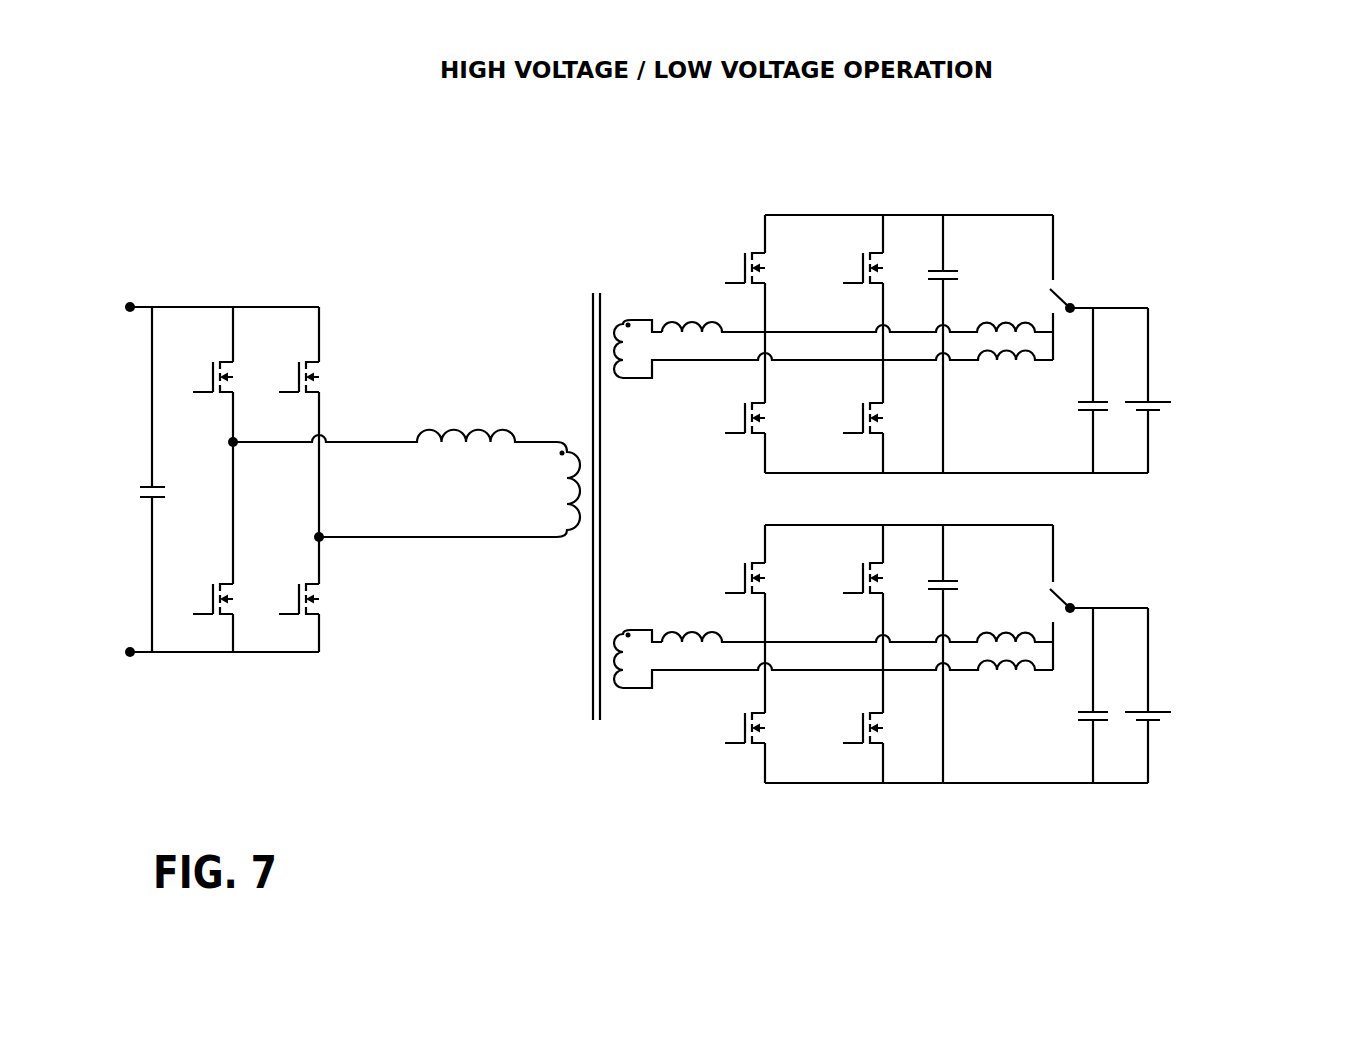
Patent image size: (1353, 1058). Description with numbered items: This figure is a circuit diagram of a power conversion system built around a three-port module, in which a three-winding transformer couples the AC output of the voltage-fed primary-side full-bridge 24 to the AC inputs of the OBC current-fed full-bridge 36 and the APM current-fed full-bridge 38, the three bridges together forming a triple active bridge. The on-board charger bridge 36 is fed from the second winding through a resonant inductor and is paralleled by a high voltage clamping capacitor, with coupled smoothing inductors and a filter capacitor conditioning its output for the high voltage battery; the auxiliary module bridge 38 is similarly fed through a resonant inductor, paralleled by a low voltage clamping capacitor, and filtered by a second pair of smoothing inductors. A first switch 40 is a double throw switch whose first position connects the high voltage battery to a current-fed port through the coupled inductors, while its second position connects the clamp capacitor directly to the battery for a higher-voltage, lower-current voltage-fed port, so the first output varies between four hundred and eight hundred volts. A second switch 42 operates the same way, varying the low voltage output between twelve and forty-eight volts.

The voltage-fed primary-side full-bridge 24 is at (437, 258).
The OBC current-fed full-bridge 36 is at (967, 312).
The APM current-fed full-bridge 38 is at (919, 697).
The first switch 40 is at (1073, 305).
The second switch 42 is at (1073, 605).